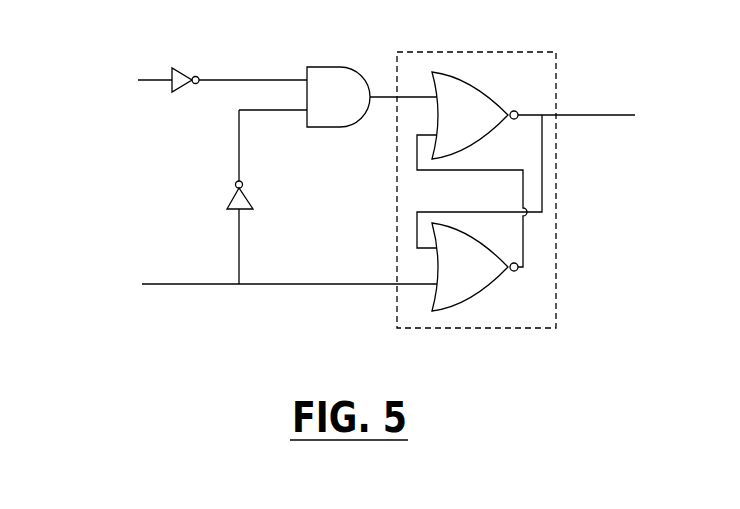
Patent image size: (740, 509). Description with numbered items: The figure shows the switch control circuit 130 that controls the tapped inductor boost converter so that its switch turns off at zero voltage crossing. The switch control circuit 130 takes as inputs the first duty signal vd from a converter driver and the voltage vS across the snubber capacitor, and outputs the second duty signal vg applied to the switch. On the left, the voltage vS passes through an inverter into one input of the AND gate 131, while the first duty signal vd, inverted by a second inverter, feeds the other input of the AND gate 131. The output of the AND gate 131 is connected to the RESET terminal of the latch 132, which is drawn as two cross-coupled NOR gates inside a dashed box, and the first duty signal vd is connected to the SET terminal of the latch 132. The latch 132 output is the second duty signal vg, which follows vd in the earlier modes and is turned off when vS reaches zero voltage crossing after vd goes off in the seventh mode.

The switch control circuit 130 is at (88, 20).
The AND gate 131 is at (327, 66).
The latch 132 is at (515, 52).